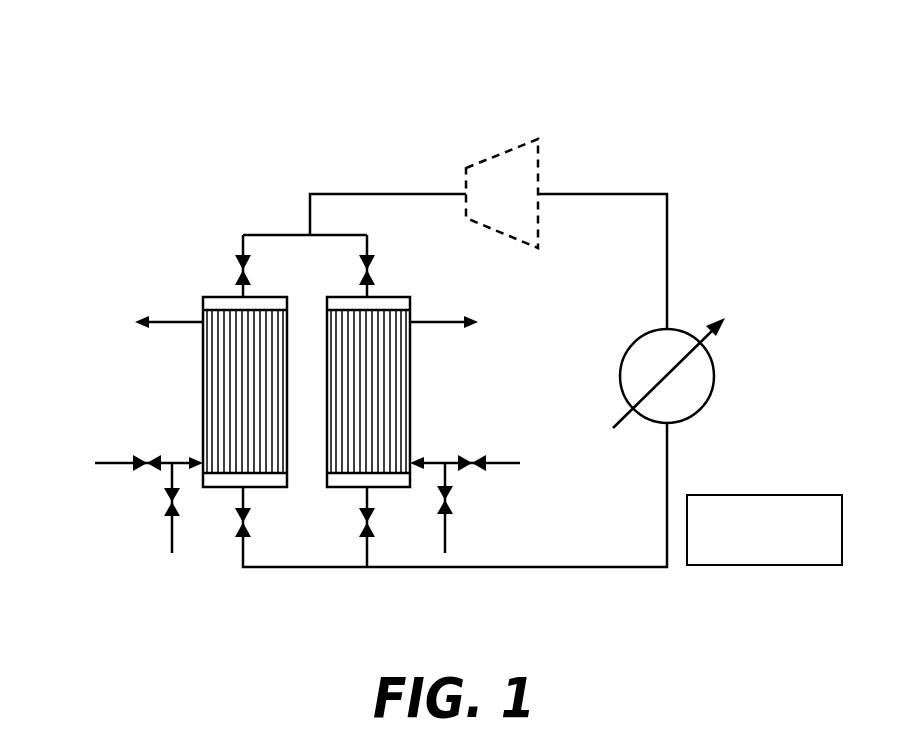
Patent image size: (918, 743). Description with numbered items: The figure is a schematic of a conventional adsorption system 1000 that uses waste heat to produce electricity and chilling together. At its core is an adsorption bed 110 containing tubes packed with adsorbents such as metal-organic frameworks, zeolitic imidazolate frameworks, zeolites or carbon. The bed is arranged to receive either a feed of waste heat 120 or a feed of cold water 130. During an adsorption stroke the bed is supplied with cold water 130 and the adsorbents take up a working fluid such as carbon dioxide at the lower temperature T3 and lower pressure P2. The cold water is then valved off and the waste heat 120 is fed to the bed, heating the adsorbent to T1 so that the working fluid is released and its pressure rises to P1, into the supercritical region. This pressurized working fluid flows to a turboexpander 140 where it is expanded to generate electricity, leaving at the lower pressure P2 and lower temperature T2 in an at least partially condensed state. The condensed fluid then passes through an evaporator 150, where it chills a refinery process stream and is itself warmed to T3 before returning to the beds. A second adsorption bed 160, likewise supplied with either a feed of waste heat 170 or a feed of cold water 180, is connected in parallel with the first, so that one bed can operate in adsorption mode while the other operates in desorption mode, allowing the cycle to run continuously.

The adsorption system 1000 is at (434, 80).
The adsorption bed 110 is at (203, 376).
The feed of waste heat 120 is at (98, 463).
The feed of cold water 130 is at (172, 536).
The turboexpander 140 is at (522, 164).
The evaporator 150 is at (712, 359).
The second adsorption bed 160 is at (410, 370).
The feed of waste heat 170 is at (505, 463).
The feed of cold water 180 is at (445, 540).